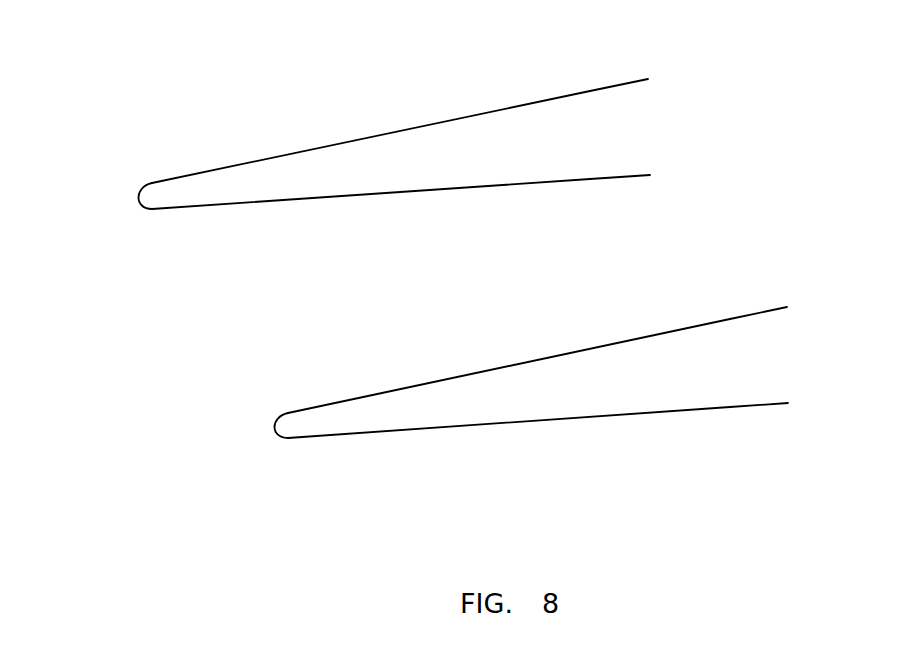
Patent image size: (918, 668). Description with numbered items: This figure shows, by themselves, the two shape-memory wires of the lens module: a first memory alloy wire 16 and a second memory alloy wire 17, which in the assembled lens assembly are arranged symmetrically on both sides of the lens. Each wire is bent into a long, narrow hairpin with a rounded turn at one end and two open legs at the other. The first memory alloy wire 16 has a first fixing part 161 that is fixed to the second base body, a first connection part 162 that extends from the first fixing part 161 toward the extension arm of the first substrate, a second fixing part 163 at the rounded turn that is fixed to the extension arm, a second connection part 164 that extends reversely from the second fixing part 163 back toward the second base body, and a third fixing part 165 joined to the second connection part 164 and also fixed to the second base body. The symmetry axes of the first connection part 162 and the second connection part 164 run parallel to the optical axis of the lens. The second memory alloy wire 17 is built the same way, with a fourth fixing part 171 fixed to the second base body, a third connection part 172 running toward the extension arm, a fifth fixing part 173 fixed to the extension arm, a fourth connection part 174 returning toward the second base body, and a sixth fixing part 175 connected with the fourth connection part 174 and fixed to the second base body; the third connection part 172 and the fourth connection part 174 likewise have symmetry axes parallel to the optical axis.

The first memory alloy wire 16 is at (519, 367).
The first fixing part 161 is at (785, 405).
The first connection part 162 is at (546, 420).
The second fixing part 163 is at (276, 421).
The second connection part 164 is at (543, 357).
The third fixing part 165 is at (786, 307).
The second memory alloy wire 17 is at (376, 137).
The fourth fixing part 171 is at (645, 177).
The third connection part 172 is at (408, 193).
The fifth fixing part 173 is at (139, 193).
The fourth connection part 174 is at (407, 129).
The sixth fixing part 175 is at (648, 79).